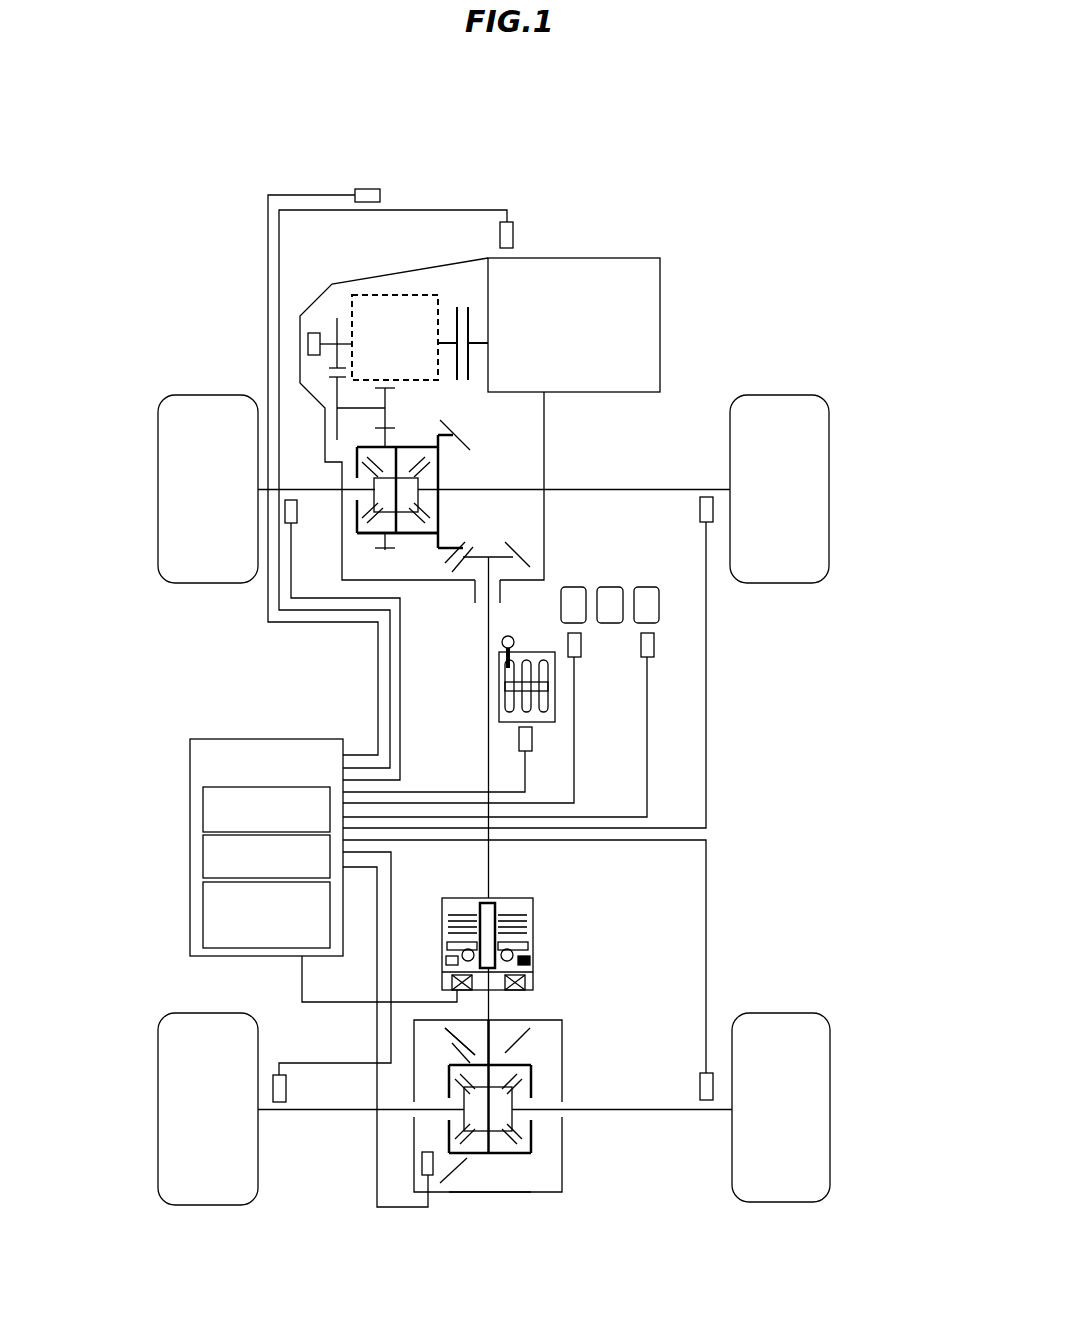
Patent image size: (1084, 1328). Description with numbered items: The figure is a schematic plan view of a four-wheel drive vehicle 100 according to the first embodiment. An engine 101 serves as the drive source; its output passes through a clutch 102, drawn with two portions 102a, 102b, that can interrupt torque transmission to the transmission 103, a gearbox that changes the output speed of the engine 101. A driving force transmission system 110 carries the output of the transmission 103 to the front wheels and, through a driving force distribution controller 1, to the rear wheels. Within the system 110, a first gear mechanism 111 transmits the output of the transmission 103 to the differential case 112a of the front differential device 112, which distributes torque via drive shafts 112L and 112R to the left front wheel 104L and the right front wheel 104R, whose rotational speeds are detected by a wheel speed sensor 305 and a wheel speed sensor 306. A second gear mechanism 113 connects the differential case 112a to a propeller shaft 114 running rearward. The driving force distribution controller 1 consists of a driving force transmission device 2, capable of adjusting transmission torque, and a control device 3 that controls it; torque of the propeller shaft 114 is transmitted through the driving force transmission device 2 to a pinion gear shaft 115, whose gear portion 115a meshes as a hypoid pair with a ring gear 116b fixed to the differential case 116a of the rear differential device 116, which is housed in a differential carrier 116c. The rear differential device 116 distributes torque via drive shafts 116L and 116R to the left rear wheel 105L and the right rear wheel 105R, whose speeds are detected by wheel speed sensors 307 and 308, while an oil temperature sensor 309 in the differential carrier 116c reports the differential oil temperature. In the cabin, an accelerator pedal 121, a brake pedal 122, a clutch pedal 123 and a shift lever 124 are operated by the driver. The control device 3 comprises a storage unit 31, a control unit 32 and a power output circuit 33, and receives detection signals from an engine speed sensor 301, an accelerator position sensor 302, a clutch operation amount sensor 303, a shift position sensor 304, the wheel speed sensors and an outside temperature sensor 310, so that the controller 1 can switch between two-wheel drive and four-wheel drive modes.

The four-wheel drive vehicle 100 is at (657, 137).
The engine 101 is at (615, 258).
The clutch 102 is at (460, 297).
The clutch engine-side plate 102a is at (468, 375).
The clutch transmission-side plate 102b is at (453, 365).
The transmission 103 is at (387, 295).
The left front wheel 104L is at (210, 393).
The right front wheel 104R is at (777, 393).
The left rear wheel 105L is at (217, 1205).
The right rear wheel 105R is at (767, 1202).
The driving force transmission system 110 is at (305, 294).
The first gear mechanism 111 is at (315, 368).
The front differential device 112 is at (412, 542).
The differential case 112a is at (370, 535).
The drive shaft 112L is at (313, 488).
The drive shaft 112R is at (652, 488).
The second gear mechanism 113 is at (512, 480).
The propeller shaft 114 is at (487, 707).
The pinion gear shaft 115 is at (490, 1005).
The gear portion 115a is at (528, 1035).
The rear differential device 116 is at (545, 1142).
The differential case 116a is at (500, 1153).
The ring gear 116b is at (447, 1038).
The differential carrier 116c is at (473, 1193).
The drive shaft 116L is at (297, 1112).
The drive shaft 116R is at (623, 1110).
The accelerator pedal 121 is at (648, 587).
The brake pedal 122 is at (610, 587).
The clutch pedal 123 is at (573, 587).
The shift lever 124 is at (512, 635).
The driving force distribution controller 1 is at (292, 658).
The driving force transmission device 2 is at (462, 897).
The control device 3 is at (323, 738).
The storage unit 31 is at (203, 797).
The control unit 32 is at (203, 848).
The power output circuit 33 is at (203, 903).
The engine speed sensor 301 is at (513, 230).
The accelerator position sensor 302 is at (654, 647).
The clutch operation amount sensor 303 is at (580, 647).
The shift position sensor 304 is at (532, 740).
The wheel speed sensor 305 is at (297, 515).
The wheel speed sensor 306 is at (700, 508).
The wheel speed sensor 307 is at (288, 1088).
The wheel speed sensor 308 is at (700, 1088).
The oil temperature sensor 309 is at (420, 1163).
The outside temperature sensor 310 is at (363, 188).